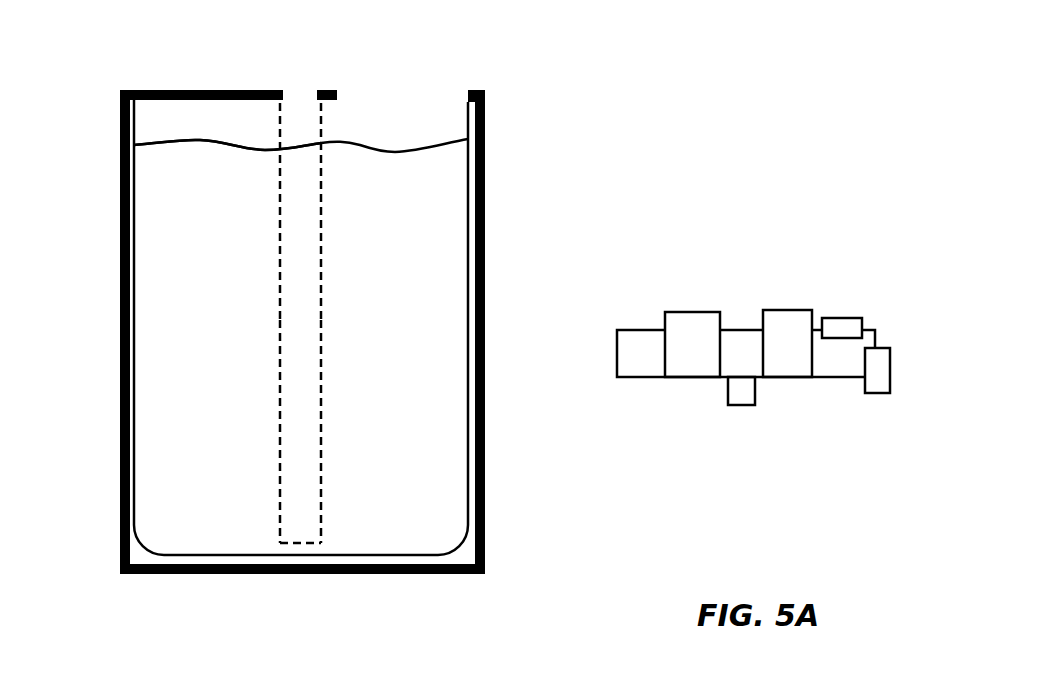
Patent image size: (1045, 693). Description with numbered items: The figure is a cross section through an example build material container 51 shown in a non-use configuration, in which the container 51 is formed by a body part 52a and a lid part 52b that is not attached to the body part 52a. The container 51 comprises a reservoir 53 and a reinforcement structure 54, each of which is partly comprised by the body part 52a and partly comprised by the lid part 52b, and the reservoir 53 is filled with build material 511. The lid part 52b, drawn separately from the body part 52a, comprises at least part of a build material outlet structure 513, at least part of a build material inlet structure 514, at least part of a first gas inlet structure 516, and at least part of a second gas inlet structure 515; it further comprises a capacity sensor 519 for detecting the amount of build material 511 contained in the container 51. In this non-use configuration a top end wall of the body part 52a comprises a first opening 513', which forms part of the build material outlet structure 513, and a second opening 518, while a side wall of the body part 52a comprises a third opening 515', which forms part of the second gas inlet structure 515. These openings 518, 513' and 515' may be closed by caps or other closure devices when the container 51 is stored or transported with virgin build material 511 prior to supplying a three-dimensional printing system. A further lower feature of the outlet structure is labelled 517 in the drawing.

The container 51 is at (97, 68).
The body part 52a is at (101, 321).
The lid part 52b is at (775, 323).
The reservoir 53 is at (370, 218).
The reinforcement structure 54 is at (120, 508).
The build material 511 is at (253, 292).
The build material outlet structure 513 is at (687, 298).
The first opening 513' is at (292, 175).
The build material inlet structure 514 is at (798, 357).
The second gas inlet structure 515 is at (894, 410).
The third opening 515' is at (524, 98).
The first gas inlet structure 516 is at (845, 328).
The probe tip 517 is at (299, 493).
The second opening 518 is at (405, 92).
The capacity sensor 519 is at (735, 395).